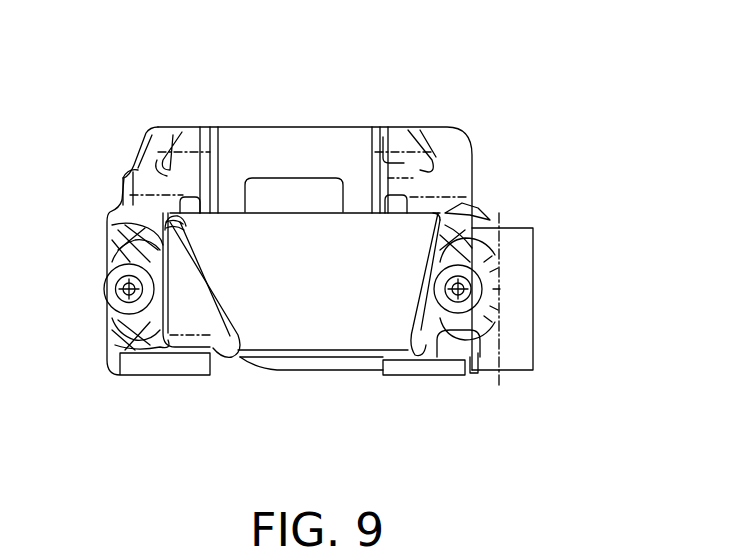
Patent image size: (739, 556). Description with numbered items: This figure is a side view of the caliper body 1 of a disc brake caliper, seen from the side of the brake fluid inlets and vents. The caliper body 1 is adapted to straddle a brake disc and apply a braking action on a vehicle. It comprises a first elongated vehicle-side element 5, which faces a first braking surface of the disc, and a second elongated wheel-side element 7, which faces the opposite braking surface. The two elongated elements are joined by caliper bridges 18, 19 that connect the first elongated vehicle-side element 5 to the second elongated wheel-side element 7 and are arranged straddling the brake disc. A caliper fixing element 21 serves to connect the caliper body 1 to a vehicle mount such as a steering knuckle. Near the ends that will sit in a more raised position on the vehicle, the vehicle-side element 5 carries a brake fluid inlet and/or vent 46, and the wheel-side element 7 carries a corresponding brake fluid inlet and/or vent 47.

The caliper body 1 is at (293, 251).
The first elongated vehicle-side element 5 is at (477, 207).
The second elongated wheel-side element 7 is at (115, 233).
The caliper bridge 18 is at (325, 293).
The caliper bridge 19 is at (298, 150).
The caliper fixing element 21 is at (512, 325).
The brake fluid inlet and/or vent 46 is at (472, 360).
The brake fluid inlet and/or vent 47 is at (120, 312).